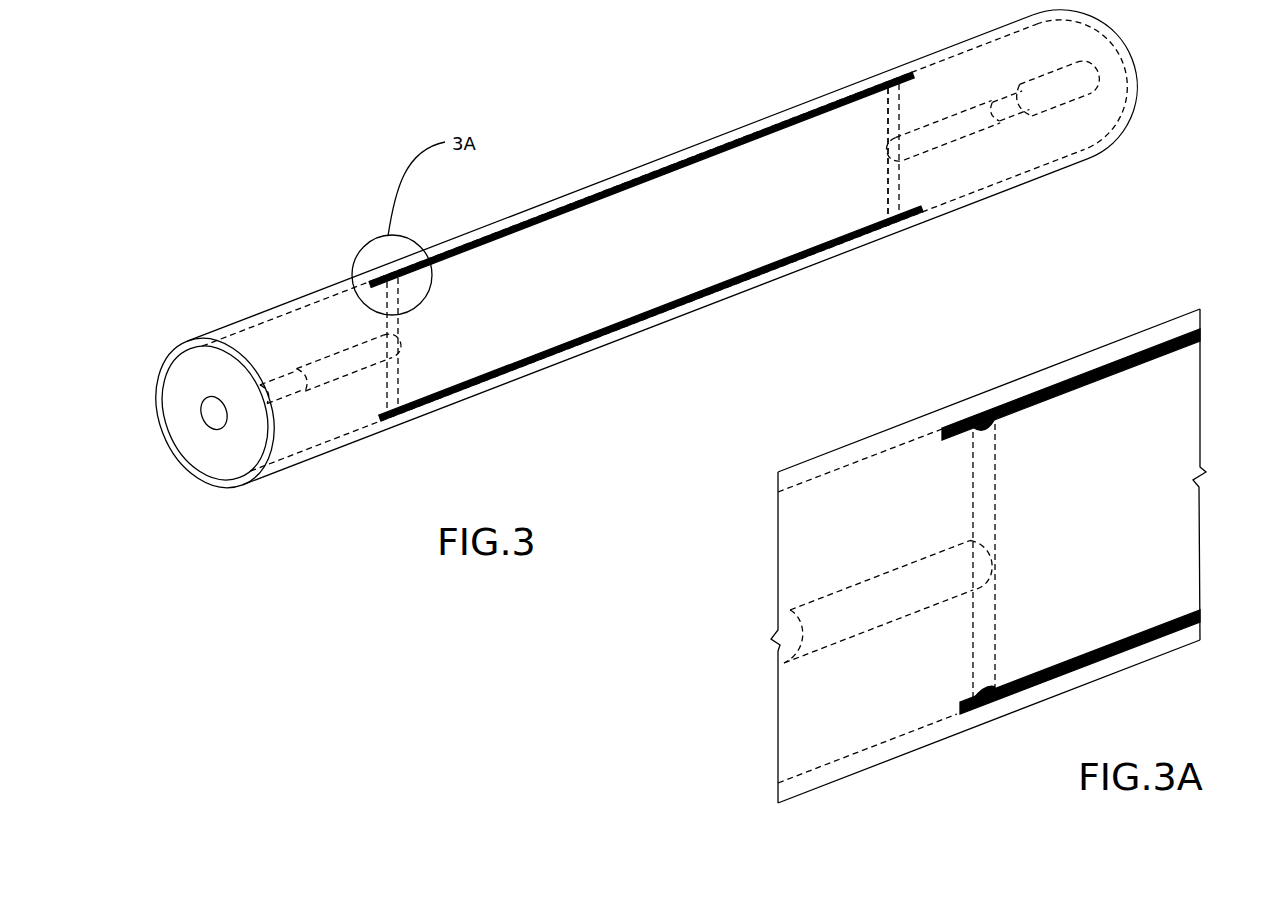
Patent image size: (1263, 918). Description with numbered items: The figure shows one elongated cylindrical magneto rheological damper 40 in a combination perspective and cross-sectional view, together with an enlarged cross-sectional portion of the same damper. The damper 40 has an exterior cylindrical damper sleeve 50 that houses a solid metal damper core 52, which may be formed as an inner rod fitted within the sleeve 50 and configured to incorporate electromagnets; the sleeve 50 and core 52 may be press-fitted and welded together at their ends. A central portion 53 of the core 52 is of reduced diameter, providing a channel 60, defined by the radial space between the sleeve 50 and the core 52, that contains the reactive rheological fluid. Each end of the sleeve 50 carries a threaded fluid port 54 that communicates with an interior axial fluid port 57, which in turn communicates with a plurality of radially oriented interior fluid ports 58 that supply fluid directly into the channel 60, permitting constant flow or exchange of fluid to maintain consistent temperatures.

In FIG. 3, the magneto rheological damper 40 is at (552, 146).
In FIG. 3, the damper sleeve 50 is at (238, 487).
In FIG. 3A, the damper sleeve 50 is at (988, 556).
In FIG. 3, the damper core 52 is at (665, 280).
In FIG. 3A, the damper core 52 is at (1102, 602).
In FIG. 3, the central portion 53 is at (526, 306).
In FIG. 3, the threaded fluid port 54 is at (202, 421).
In FIG. 3, the interior axial fluid port 57 is at (330, 367).
In FIG. 3A, the interior axial fluid port 57 is at (888, 602).
In FIG. 3, the radially oriented interior fluid port 58 is at (895, 188).
In FIG. 3, the channel 60 is at (708, 143).
In FIG. 3A, the channel 60 is at (1080, 372).